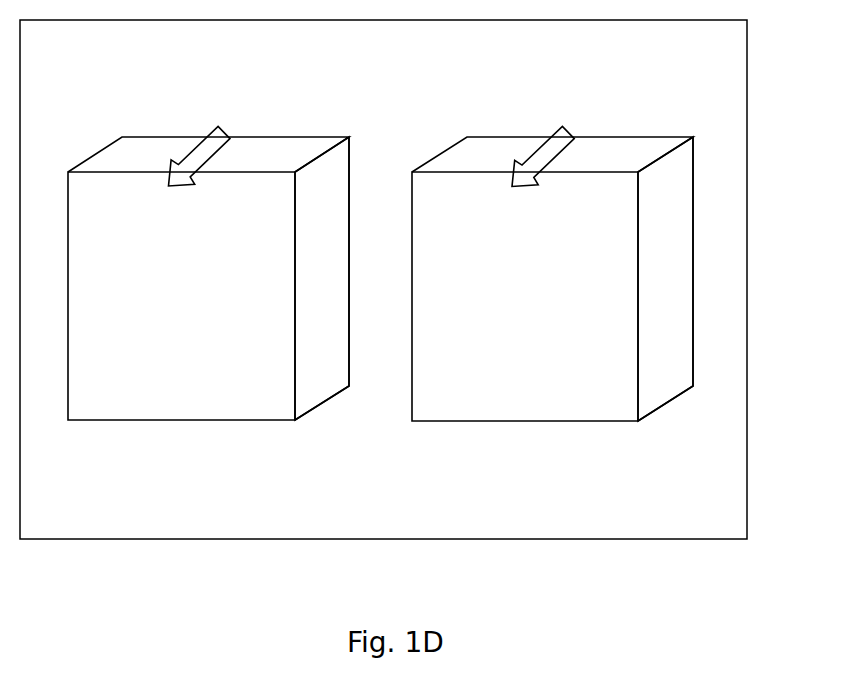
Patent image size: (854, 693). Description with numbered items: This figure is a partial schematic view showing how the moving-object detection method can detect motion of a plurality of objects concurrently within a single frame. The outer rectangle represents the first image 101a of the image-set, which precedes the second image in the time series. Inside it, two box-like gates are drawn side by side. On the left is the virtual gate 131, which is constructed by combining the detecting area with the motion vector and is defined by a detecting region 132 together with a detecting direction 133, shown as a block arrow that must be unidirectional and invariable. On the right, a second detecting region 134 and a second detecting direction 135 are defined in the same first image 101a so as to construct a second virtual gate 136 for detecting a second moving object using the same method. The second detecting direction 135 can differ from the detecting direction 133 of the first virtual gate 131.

The first image 101a is at (745, 168).
The virtual gate 131 is at (108, 154).
The detecting region 132 is at (338, 252).
The detecting direction 133 is at (197, 144).
The second detecting region 134 is at (683, 252).
The second detecting direction 135 is at (542, 145).
The second virtual gate 136 is at (450, 153).